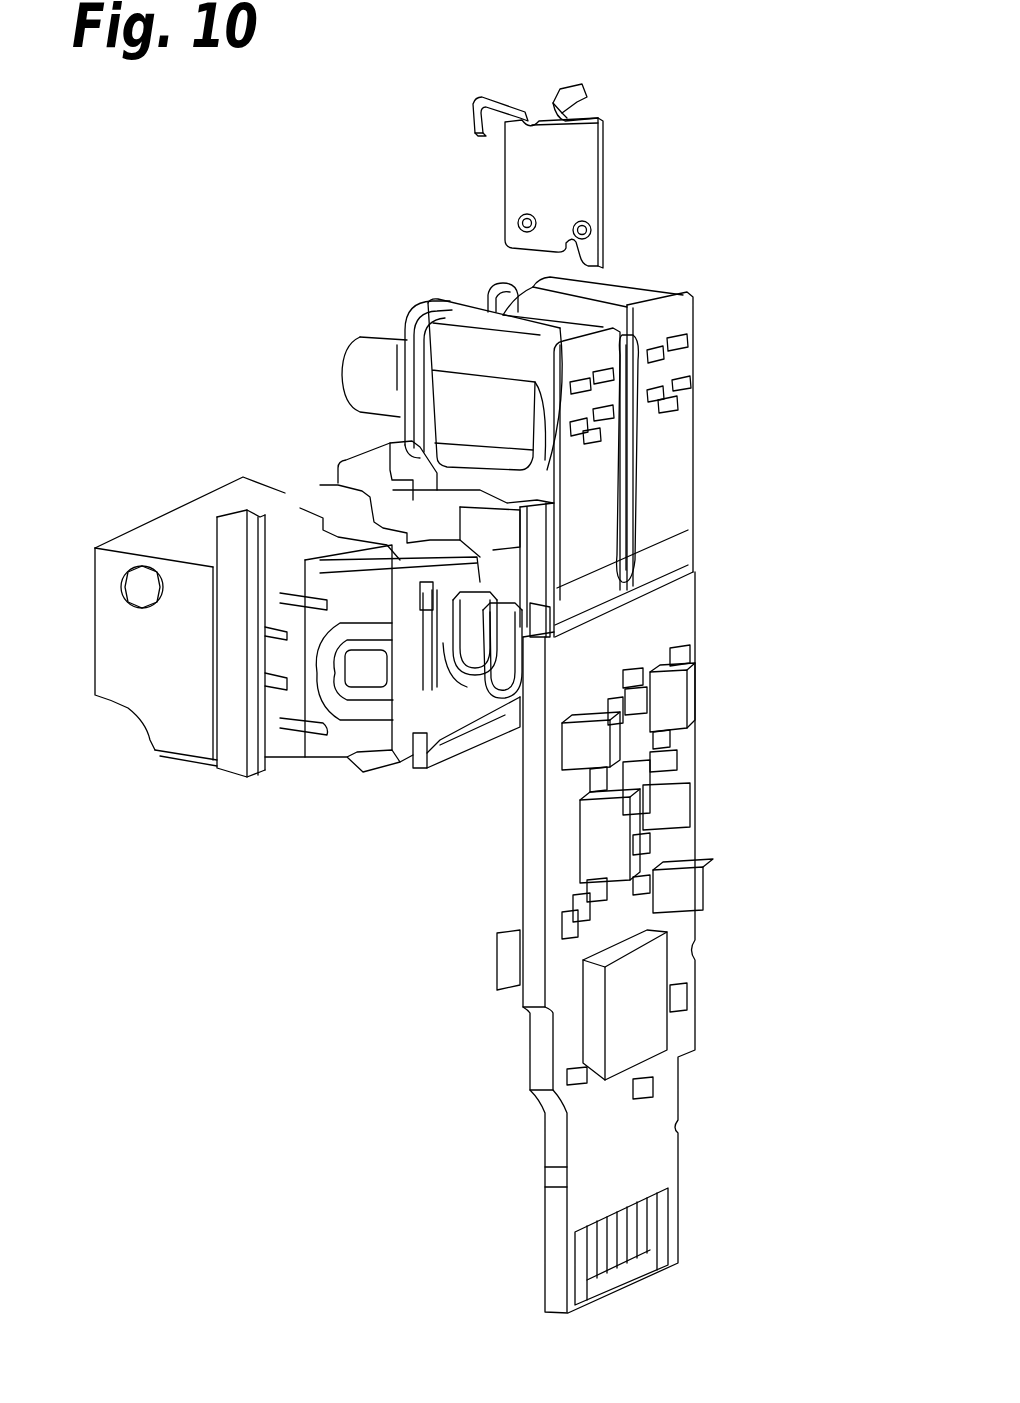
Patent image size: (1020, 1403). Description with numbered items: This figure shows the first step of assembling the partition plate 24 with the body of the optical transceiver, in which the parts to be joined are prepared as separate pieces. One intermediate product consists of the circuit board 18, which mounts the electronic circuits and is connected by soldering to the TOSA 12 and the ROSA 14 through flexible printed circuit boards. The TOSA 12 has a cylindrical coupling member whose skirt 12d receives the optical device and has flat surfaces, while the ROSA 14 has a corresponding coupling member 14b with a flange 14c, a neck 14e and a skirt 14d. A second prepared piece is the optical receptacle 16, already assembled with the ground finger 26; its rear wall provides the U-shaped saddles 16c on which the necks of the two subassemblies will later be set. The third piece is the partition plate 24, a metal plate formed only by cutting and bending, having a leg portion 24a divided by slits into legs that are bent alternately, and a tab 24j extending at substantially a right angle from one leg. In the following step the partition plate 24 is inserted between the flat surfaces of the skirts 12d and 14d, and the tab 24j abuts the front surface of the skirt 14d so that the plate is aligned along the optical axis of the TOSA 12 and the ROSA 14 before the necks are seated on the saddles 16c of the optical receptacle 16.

The TOSA 12 is at (583, 404).
The skirt 12d is at (623, 291).
The ROSA 14 is at (333, 411).
The coupling member of the ROSA 14b is at (333, 341).
The flange of the ROSA 14c is at (400, 390).
The skirt of the ROSA 14d is at (457, 352).
The neck of the ROSA 14e is at (423, 380).
The optical receptacle 16 is at (160, 708).
The saddle 16c is at (478, 680).
The circuit board 18 is at (665, 1152).
The partition plate 24 is at (532, 137).
The leg portion 24a is at (592, 177).
The tab 24j is at (472, 132).
The ground finger 26 is at (318, 708).